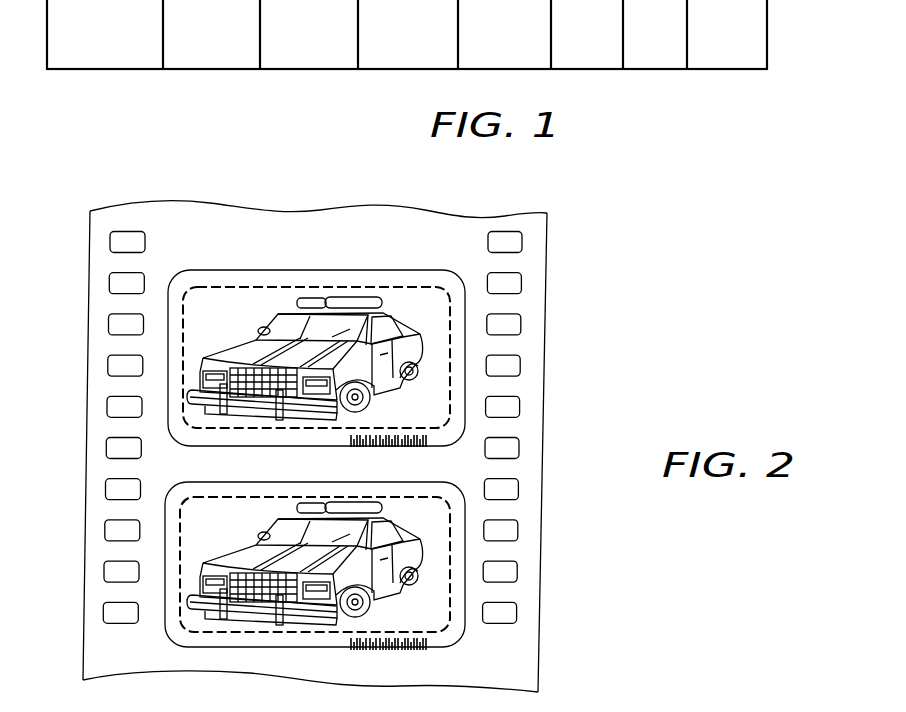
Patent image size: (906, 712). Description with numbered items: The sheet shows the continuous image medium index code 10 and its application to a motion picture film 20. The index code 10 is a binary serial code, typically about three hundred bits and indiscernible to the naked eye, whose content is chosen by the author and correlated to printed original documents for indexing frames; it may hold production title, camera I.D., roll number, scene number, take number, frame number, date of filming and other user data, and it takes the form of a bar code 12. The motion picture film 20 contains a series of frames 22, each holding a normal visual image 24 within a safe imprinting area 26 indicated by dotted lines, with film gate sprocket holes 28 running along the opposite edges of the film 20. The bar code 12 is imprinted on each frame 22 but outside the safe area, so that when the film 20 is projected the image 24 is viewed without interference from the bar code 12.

In FIG. 1, the continuous image medium index code 10 is at (202, 79).
In FIG. 2, the bar code 12 is at (430, 444).
In FIG. 2, the motion picture film 20 is at (89, 385).
In FIG. 2, the frame 22 is at (168, 350).
In FIG. 2, the visual image 24 is at (213, 560).
In FIG. 2, the safe imprinting area 26 is at (452, 378).
In FIG. 2, the film gate sprocket holes 28 is at (512, 338).